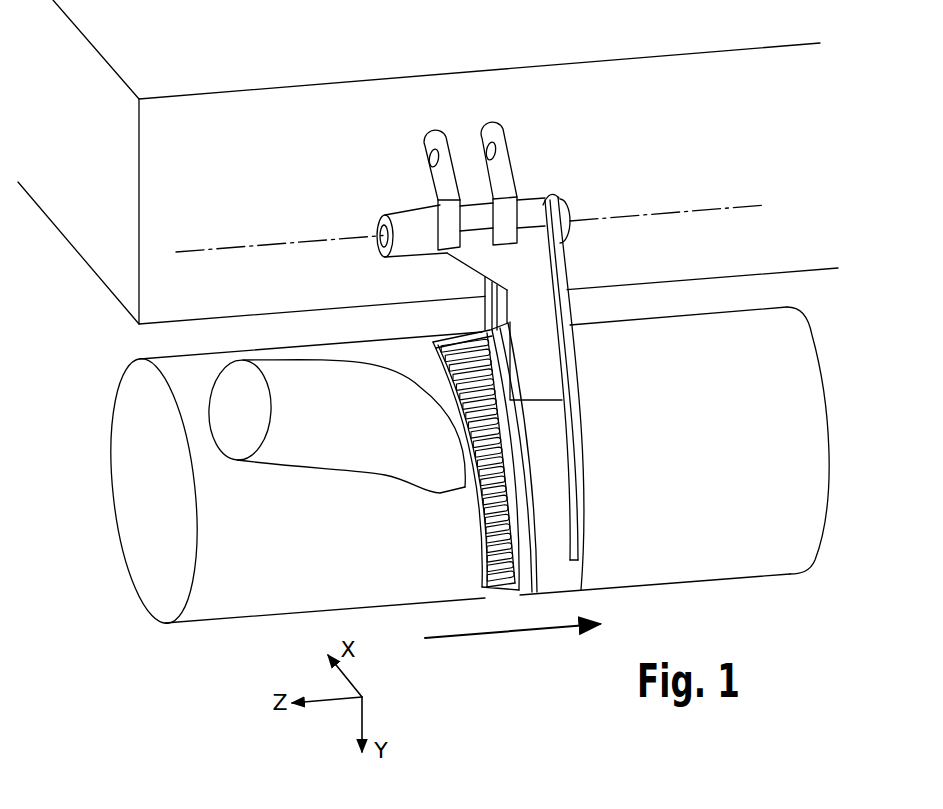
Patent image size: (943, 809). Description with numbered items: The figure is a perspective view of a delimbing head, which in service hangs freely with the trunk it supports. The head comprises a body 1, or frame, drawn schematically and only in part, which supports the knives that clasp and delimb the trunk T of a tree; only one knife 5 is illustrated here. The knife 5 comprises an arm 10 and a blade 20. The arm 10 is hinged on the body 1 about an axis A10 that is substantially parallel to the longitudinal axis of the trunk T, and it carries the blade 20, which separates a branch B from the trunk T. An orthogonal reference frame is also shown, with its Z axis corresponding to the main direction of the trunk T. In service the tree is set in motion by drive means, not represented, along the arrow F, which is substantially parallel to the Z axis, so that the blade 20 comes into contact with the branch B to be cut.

The body 1 is at (218, 143).
The knife 5 is at (555, 357).
The arm 10 is at (556, 423).
The blade 20 is at (470, 492).
The axis A10 is at (498, 219).
The branch B is at (233, 388).
The trunk T is at (827, 390).
The arrow F is at (512, 645).